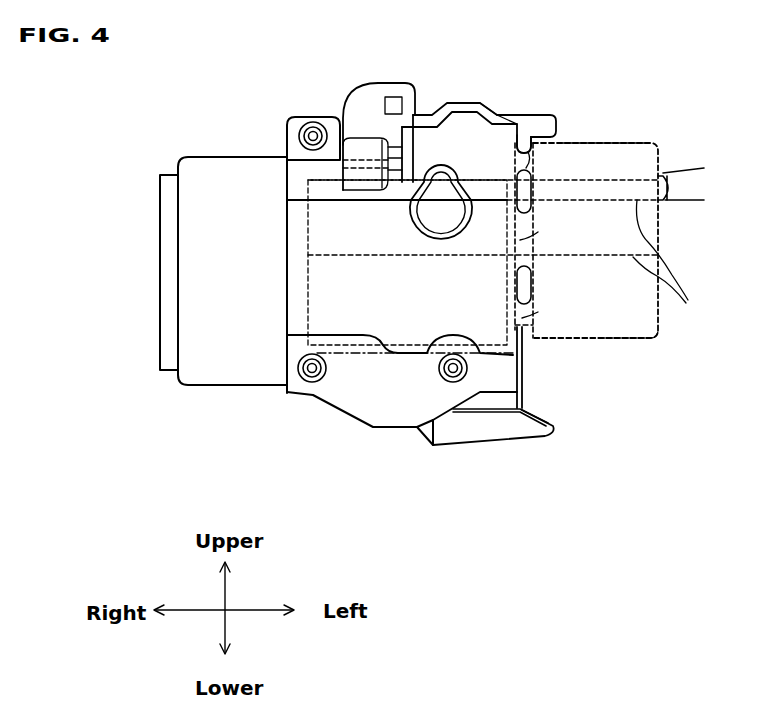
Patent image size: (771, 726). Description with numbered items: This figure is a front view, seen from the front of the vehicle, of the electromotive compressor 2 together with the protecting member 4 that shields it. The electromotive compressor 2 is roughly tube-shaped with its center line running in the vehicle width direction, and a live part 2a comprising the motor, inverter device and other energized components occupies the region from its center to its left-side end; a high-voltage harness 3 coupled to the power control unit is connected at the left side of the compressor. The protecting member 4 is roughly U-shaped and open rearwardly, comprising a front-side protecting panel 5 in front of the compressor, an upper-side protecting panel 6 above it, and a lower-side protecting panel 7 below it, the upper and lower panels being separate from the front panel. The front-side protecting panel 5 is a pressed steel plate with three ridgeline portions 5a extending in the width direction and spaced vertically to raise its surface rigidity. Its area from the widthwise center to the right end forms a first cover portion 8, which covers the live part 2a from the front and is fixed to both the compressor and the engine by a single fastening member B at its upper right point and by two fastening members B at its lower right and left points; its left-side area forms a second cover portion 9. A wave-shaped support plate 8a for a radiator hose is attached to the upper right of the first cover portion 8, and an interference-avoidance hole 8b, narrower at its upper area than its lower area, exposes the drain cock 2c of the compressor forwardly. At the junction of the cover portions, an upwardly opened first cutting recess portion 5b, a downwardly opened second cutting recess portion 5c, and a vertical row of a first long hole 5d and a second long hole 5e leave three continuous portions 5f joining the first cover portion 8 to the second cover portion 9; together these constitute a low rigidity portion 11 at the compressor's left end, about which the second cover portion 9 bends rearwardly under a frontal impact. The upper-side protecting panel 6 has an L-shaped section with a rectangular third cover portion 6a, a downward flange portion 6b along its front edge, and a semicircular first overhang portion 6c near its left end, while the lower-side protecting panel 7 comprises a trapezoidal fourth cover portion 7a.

The electromotive compressor 2 is at (265, 152).
The live part 2a is at (308, 242).
The drain cock 2c is at (438, 236).
The high-voltage harness 3 is at (680, 205).
The protecting member 4 is at (624, 127).
The front-side protecting panel 5 is at (608, 340).
The ridgeline portions 5a is at (637, 182).
The first cutting recess portion 5b is at (540, 138).
The second cutting recess portion 5c is at (524, 338).
The first long hole 5d is at (531, 181).
The second long hole 5e is at (531, 288).
The continuous portions 5f is at (532, 158).
The upper-side protecting panel 6 is at (446, 104).
The third cover portion 6a is at (518, 118).
The flange portion 6b is at (535, 122).
The first overhang portion 6c is at (495, 106).
The lower-side protecting panel 7 is at (470, 446).
The fourth cover portion 7a is at (518, 440).
The first cover portion 8 is at (352, 398).
The support plate 8a is at (364, 86).
The interference-avoidance hole 8b is at (425, 210).
The second cover portion 9 is at (635, 327).
The low rigidity portion 11 is at (533, 327).
The fastening member B is at (312, 122).